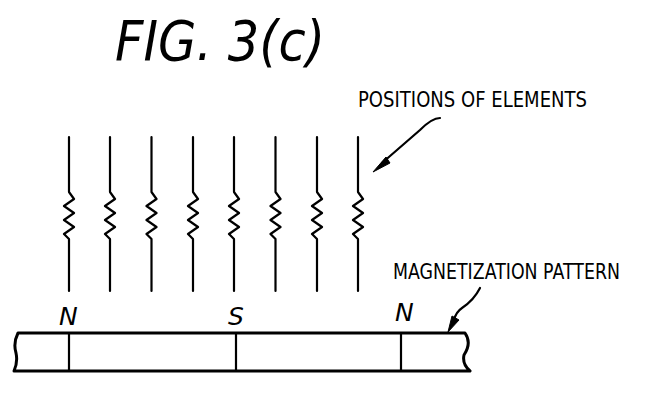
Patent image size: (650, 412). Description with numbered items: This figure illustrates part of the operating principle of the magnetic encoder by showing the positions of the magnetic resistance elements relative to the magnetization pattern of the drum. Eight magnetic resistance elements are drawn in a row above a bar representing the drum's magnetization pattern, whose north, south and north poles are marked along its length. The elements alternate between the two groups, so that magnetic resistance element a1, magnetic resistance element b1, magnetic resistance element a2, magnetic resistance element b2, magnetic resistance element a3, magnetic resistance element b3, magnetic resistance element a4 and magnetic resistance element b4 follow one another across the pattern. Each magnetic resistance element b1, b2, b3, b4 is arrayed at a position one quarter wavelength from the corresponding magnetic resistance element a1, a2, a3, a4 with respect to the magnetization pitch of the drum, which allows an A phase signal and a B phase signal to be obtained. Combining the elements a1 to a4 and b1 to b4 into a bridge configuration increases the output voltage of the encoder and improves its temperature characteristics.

The magnetic resistance element a1 is at (52, 214).
The magnetic resistance element b1 is at (96, 214).
The magnetic resistance element a2 is at (137, 214).
The magnetic resistance element b2 is at (179, 214).
The magnetic resistance element a3 is at (219, 214).
The magnetic resistance element b3 is at (262, 214).
The magnetic resistance element a4 is at (302, 214).
The magnetic resistance element b4 is at (344, 214).